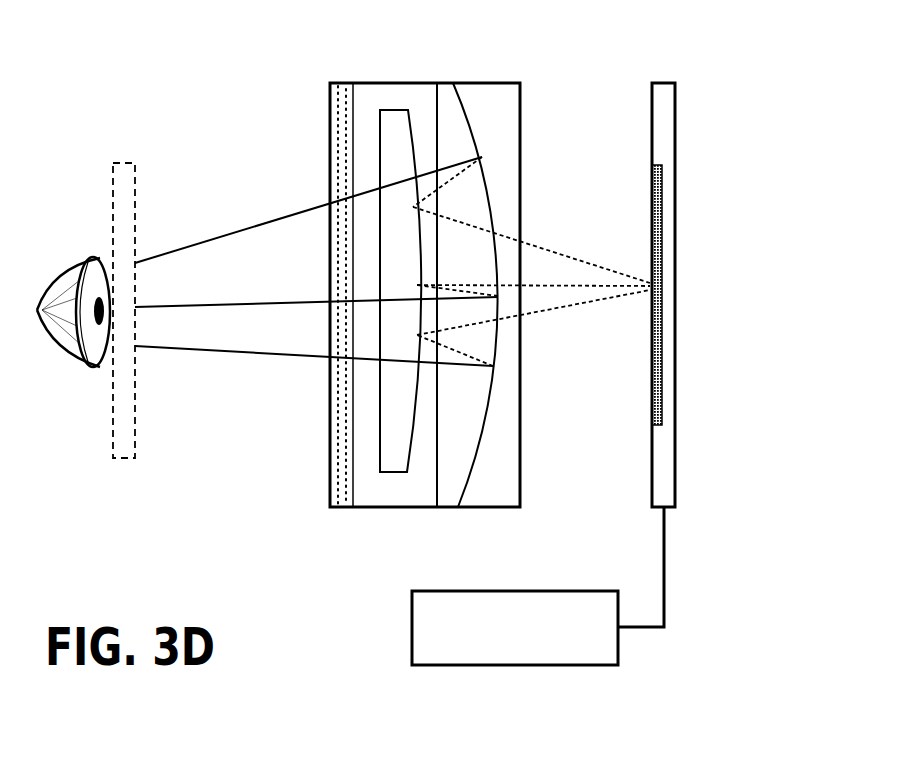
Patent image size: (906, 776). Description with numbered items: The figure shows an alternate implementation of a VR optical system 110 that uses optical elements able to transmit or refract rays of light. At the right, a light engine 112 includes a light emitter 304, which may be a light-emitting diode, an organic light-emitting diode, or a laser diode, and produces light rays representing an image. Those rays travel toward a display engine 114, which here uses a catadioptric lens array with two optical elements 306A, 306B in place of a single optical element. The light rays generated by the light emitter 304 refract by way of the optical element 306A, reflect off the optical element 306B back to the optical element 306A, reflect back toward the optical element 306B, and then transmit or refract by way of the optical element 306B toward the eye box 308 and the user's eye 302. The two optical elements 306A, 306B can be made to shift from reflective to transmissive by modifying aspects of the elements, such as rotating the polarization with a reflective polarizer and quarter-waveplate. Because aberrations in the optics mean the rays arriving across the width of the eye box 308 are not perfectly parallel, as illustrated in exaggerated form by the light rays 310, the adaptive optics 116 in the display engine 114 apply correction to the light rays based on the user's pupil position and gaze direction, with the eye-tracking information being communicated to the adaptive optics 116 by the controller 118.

The optical system 110 is at (557, 34).
The light engine 112 is at (662, 83).
The display engine 114 is at (366, 83).
The adaptive optics 116 is at (330, 480).
The controller 118 is at (535, 641).
The user's eye 302 is at (80, 262).
The light emitter 304 is at (657, 165).
The optical element 306A is at (492, 182).
The optical element 306B is at (392, 472).
The eye box 308 is at (127, 163).
The light rays 310 is at (285, 215).